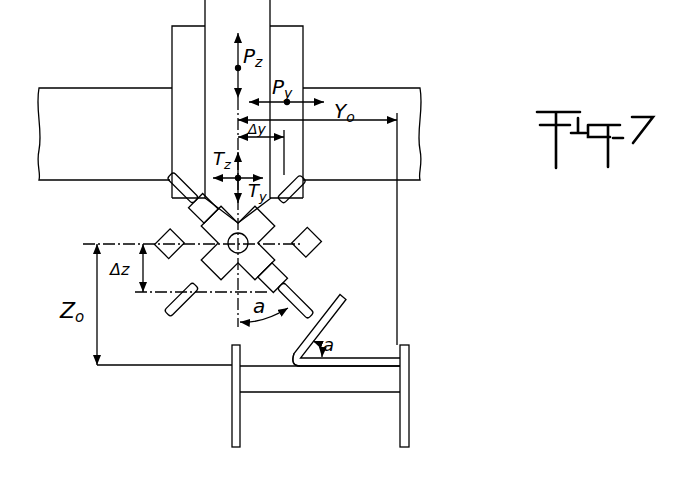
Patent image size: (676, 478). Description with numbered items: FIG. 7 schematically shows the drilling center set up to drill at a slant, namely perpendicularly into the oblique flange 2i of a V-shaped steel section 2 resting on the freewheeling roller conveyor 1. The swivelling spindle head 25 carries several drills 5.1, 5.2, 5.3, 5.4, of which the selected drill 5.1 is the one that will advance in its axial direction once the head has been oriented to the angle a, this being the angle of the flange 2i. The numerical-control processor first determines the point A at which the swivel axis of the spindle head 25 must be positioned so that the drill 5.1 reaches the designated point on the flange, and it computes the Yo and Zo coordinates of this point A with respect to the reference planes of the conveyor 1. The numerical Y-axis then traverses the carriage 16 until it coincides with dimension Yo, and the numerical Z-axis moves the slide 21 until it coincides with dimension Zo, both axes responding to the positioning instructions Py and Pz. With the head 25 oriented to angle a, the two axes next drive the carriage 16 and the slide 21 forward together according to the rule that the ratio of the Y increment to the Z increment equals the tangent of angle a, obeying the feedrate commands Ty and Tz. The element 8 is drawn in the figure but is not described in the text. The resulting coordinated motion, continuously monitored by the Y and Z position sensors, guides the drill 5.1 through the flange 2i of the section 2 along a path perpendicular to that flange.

The freewheeling roller conveyor 1 is at (411, 385).
The steel section 2 is at (348, 303).
The oblique flange 2i is at (296, 350).
The drill 5.1 is at (293, 304).
The drill 5.2 is at (172, 316).
The drill 5.3 is at (170, 182).
The drill 5.4 is at (306, 184).
The support block 8 is at (380, 92).
The carriage 16 is at (295, 53).
The slide 21 is at (213, 124).
The spindle head 25 is at (260, 242).
The point A is at (212, 238).